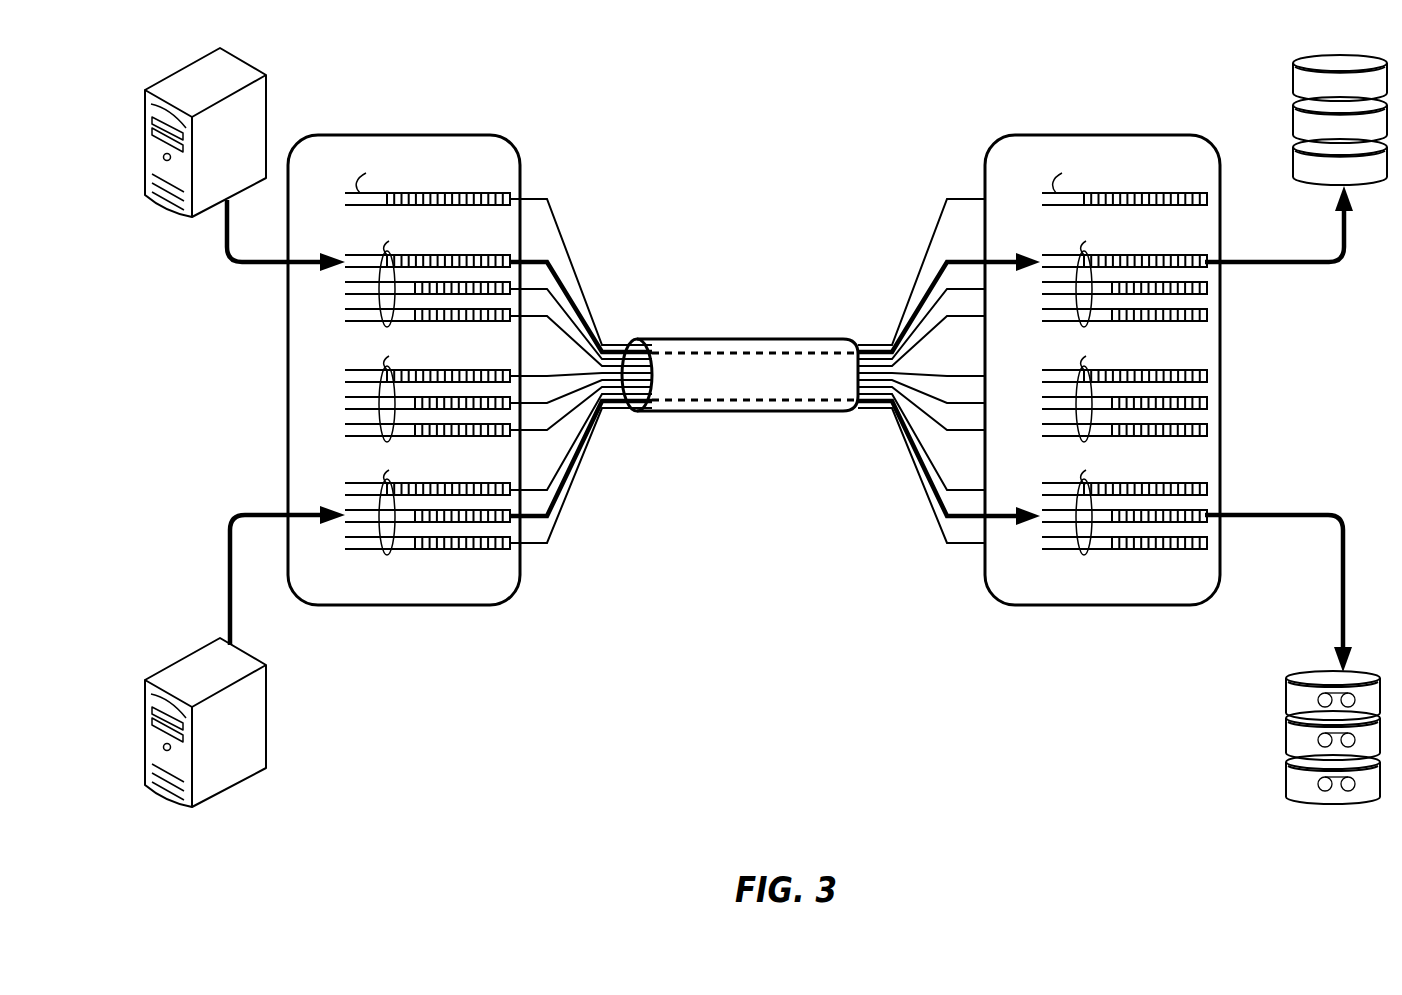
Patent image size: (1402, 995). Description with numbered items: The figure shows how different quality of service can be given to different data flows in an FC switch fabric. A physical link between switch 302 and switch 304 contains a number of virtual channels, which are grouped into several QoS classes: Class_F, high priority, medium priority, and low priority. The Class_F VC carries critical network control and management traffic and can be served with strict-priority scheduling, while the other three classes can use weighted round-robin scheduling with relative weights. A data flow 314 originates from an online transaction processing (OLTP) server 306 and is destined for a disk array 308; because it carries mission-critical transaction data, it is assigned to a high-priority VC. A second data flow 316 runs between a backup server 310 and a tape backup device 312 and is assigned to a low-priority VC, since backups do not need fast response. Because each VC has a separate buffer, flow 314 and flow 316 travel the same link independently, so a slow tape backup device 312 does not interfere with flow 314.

The switch 302 is at (470, 370).
The switch 304 is at (1039, 370).
The online transaction processing (OLTP) server 306 is at (237, 57).
The disk array 308 is at (1325, 54).
The backup server 310 is at (268, 736).
The tape backup device 312 is at (1305, 800).
The data flow 314 is at (1316, 293).
The data flow 316 is at (1325, 513).